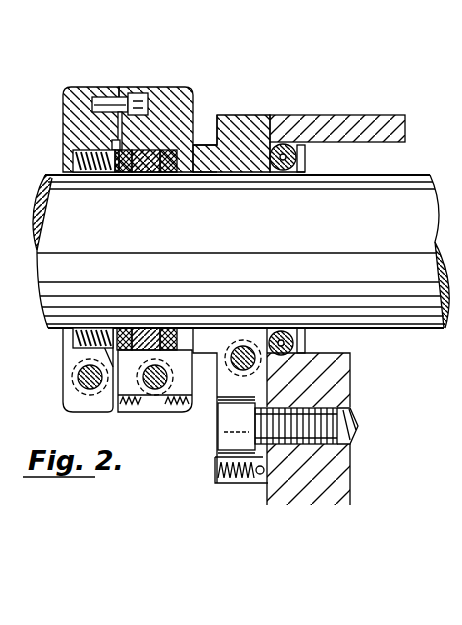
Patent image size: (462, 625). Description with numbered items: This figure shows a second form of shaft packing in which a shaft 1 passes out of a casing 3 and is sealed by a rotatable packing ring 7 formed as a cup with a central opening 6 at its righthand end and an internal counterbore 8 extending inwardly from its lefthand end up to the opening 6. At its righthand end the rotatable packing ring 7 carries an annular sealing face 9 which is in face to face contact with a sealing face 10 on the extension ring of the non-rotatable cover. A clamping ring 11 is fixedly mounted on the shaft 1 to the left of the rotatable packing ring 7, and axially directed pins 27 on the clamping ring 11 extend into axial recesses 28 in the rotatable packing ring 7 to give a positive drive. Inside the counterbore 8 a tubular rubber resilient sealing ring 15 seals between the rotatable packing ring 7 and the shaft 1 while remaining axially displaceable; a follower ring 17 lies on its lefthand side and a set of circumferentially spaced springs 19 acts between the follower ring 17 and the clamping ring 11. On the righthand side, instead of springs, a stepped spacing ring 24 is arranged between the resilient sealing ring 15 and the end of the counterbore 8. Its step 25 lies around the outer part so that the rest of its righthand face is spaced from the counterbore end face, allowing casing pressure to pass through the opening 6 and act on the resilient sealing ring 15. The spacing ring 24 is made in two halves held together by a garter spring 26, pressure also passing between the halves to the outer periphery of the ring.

The shaft 1 is at (393, 178).
The casing 3 is at (358, 123).
The central opening 6 is at (197, 166).
The rotatable packing ring 7 is at (170, 87).
The counterbore 8 is at (157, 150).
The annular sealing face 9 is at (186, 342).
The sealing face 10 is at (207, 173).
The clamping ring 11 is at (82, 98).
The resilient sealing ring 15 is at (142, 173).
The follower ring 17 is at (125, 173).
The springs 19 is at (93, 173).
The stepped spacing ring 24 is at (167, 173).
The step 25 is at (194, 151).
The garter spring 26 is at (168, 115).
The axially directed pins 27 is at (108, 100).
The axial recesses 28 is at (137, 93).